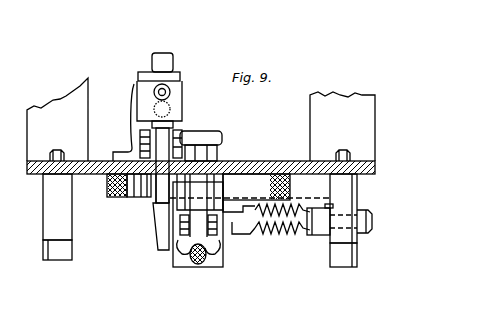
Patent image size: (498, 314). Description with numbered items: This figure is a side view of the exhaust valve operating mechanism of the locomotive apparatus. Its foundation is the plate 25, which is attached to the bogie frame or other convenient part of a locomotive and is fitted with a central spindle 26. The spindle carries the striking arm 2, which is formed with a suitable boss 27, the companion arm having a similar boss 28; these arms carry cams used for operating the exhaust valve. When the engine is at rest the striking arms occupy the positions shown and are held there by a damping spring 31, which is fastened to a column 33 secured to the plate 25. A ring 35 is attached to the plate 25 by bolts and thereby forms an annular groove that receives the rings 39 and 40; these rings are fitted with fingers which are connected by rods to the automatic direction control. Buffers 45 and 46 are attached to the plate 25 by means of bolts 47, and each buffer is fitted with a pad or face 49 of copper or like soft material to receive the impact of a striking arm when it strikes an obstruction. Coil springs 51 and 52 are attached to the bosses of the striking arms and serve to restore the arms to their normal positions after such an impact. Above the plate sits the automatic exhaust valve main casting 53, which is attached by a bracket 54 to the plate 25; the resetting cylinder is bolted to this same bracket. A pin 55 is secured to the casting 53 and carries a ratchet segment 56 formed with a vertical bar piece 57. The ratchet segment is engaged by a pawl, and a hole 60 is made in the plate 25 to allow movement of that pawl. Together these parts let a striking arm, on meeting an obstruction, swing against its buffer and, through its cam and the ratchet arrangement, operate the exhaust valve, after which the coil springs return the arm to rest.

The striking arm 2 is at (197, 264).
The plate 25 is at (236, 172).
The central spindle 26 is at (211, 133).
The boss 27 is at (178, 268).
The boss 28 is at (224, 190).
The damping spring 31 is at (216, 263).
The column 33 is at (208, 172).
The ring 35 is at (133, 193).
The ring 39 is at (118, 190).
The ring 40 is at (109, 180).
The buffer 45 is at (43, 223).
The buffer 46 is at (357, 193).
The bolt 47 is at (57, 150).
The pad 49 is at (43, 259).
The coil spring 51 is at (264, 240).
The coil spring 52 is at (283, 214).
The automatic exhaust valve main casting 53 is at (176, 72).
The bracket 54 is at (133, 110).
The pin 55 is at (172, 160).
The ratchet segment 56 is at (161, 200).
The vertical bar piece 57 is at (160, 236).
The hole 60 is at (184, 155).